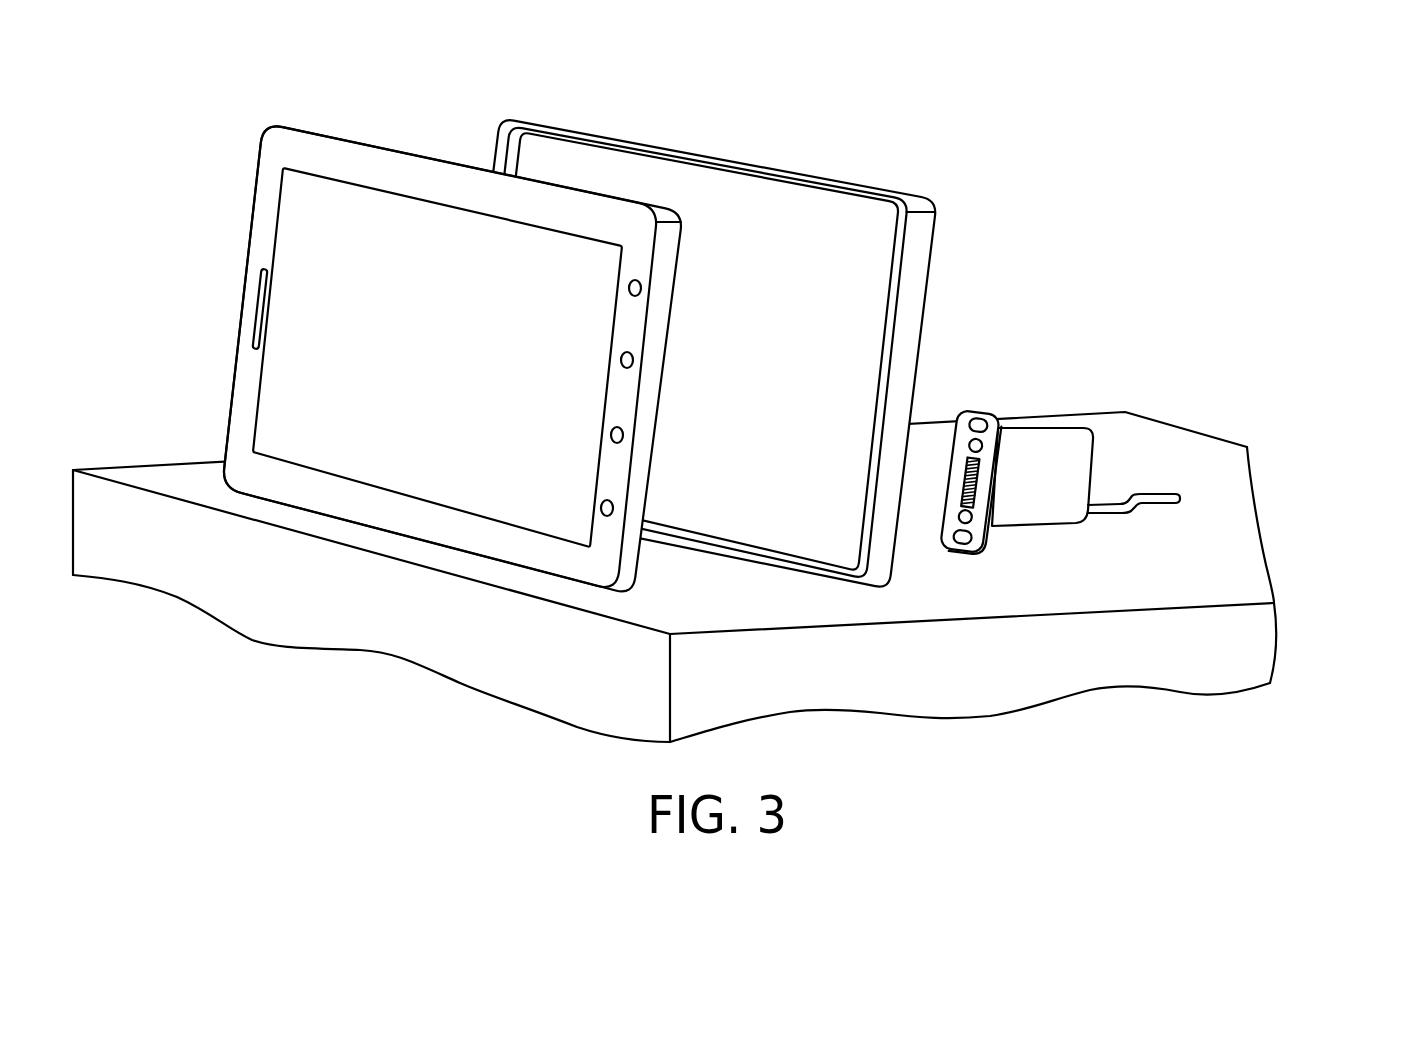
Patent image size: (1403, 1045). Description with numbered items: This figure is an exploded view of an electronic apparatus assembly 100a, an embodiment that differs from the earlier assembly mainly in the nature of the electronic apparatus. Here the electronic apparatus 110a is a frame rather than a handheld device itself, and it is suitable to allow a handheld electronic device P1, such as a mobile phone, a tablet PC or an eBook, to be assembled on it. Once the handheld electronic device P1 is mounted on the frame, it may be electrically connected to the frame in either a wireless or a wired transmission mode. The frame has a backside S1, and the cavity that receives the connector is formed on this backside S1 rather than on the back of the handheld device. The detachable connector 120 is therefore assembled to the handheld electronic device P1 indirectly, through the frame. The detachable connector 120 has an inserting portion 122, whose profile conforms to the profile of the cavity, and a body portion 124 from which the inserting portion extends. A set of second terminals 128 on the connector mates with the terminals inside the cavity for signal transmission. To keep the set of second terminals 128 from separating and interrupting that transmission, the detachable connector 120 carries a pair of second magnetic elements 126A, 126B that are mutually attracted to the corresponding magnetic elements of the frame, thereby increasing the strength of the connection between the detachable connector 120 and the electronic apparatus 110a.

The electronic apparatus assembly 100a is at (1162, 138).
The handheld electronic device P1 is at (388, 163).
The electronic apparatus 110a is at (718, 197).
The backside S1 is at (820, 178).
The detachable connector 120 is at (1338, 253).
The inserting portion 122 is at (997, 423).
The body portion 124 is at (1085, 460).
The second magnetic element 126A is at (979, 414).
The second magnetic element 126B is at (968, 535).
The set of second terminals 128 is at (997, 462).